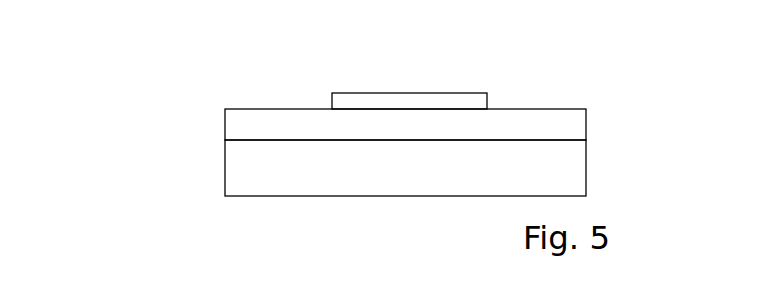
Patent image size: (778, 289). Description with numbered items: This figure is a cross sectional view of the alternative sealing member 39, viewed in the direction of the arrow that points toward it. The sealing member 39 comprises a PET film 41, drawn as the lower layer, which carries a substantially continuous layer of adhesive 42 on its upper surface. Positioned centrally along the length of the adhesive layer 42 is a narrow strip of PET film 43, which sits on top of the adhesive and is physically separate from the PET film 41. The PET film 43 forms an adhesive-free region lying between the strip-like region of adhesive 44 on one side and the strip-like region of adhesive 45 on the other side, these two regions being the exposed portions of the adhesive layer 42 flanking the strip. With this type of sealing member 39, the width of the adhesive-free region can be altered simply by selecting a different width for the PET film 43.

The sealing member 39 is at (146, 151).
The PET film 41 is at (572, 157).
The layer of adhesive 42 is at (576, 120).
The PET film 43 is at (410, 97).
The strip-like region of adhesive 44 is at (330, 85).
The strip-like region of adhesive 45 is at (586, 78).